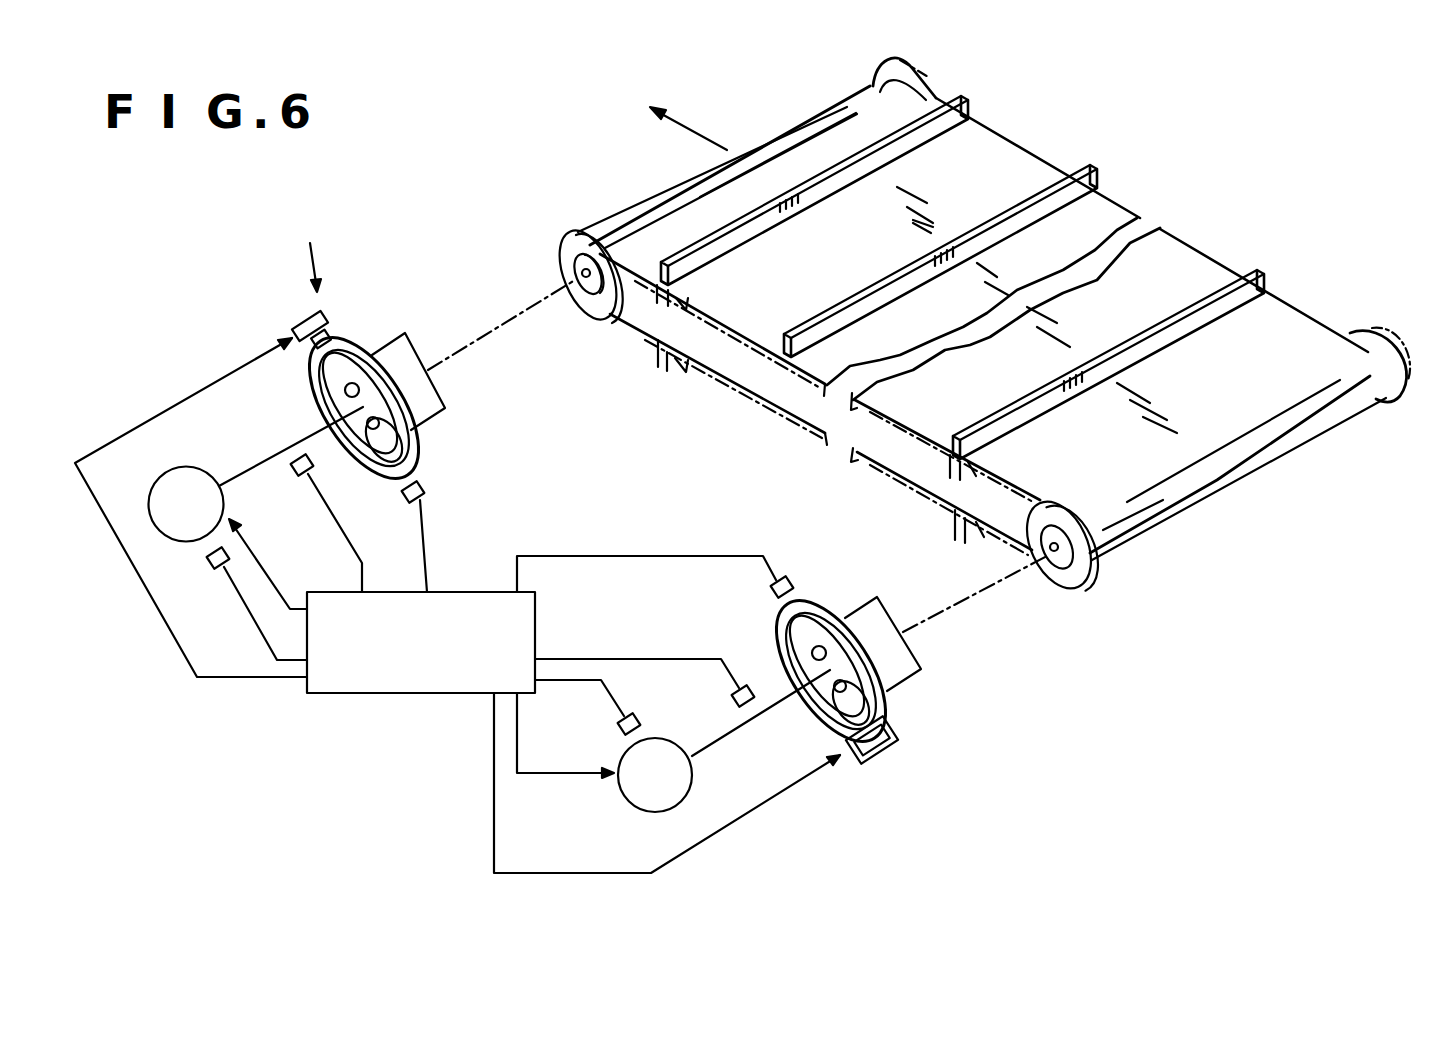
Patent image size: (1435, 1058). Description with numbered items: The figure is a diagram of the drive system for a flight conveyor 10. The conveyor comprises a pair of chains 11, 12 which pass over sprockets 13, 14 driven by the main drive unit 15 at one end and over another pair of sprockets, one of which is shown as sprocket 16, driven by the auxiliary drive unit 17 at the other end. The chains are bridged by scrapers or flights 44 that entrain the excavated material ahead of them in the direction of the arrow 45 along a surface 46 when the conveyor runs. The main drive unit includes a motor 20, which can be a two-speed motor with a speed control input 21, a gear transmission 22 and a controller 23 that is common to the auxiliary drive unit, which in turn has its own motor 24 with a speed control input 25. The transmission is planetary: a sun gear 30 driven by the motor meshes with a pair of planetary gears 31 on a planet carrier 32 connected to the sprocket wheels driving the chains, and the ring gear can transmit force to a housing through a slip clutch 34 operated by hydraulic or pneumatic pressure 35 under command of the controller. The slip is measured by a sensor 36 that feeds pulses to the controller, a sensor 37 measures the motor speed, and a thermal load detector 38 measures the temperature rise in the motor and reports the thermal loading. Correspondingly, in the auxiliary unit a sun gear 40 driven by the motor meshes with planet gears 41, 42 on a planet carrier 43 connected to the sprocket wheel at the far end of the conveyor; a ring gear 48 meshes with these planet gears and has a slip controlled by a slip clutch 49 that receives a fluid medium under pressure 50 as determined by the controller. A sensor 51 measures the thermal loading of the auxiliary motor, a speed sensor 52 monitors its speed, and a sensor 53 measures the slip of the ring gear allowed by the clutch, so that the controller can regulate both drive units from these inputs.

The flight conveyor 10 is at (1120, 142).
The chain 11 is at (566, 244).
The chain 12 is at (877, 79).
The sprocket 13 is at (566, 266).
The sprocket 14 is at (853, 104).
The main drive unit 15 is at (313, 254).
The sprocket 16 is at (1055, 570).
The auxiliary drive unit 17 is at (838, 604).
The motor 20 is at (193, 469).
The speed control input 21 is at (258, 541).
The gear transmission 22 is at (428, 444).
The controller 23 is at (408, 693).
The motor 24 is at (693, 775).
The speed control input 25 is at (581, 776).
The sun gear 30 is at (363, 407).
The planetary gears 31 is at (350, 368).
The planet carrier 32 is at (445, 389).
The slip clutch 34 is at (309, 315).
The hydraulic or pneumatic pressure 35 is at (253, 357).
The sensor 36 is at (424, 494).
The sensor 37 is at (296, 471).
The thermal load detector 38 is at (241, 603).
The sun gear 40 is at (830, 670).
The planet gear 41 is at (814, 632).
The planet gear 42 is at (830, 734).
The planet carrier 43 is at (910, 661).
The flights 44 is at (822, 322).
The arrow 45 is at (703, 132).
The surface 46 is at (1163, 258).
The ring gear 48 is at (888, 710).
The slip clutch 49 is at (880, 756).
The fluid medium under pressure 50 is at (805, 780).
The sensor 51 is at (618, 727).
The speed sensor 52 is at (732, 700).
The sensor 53 is at (774, 584).